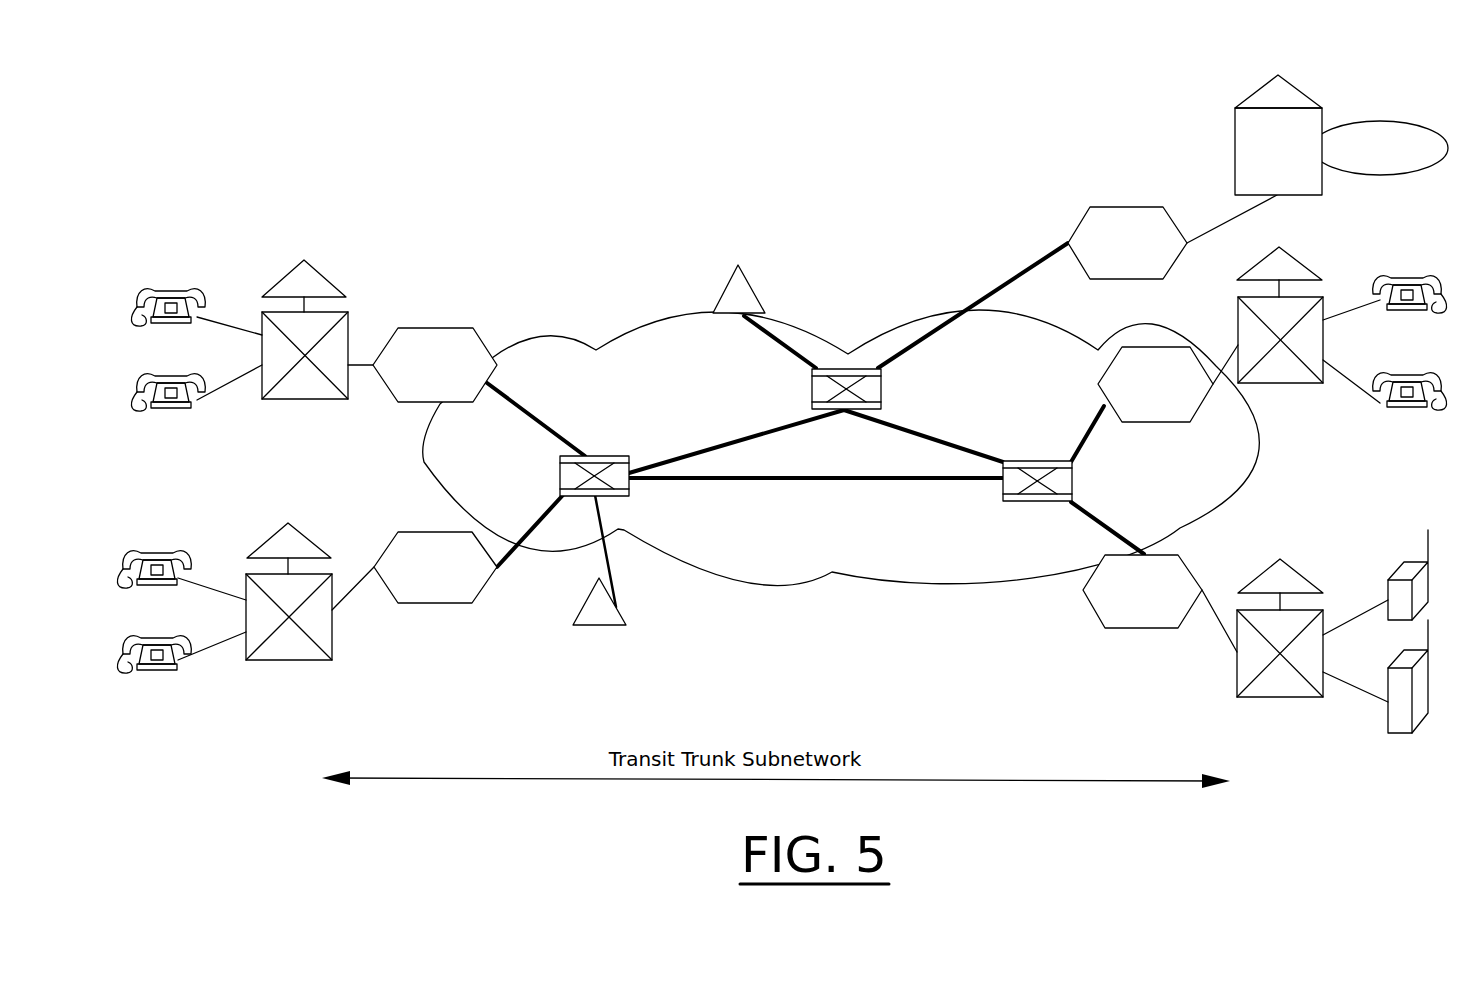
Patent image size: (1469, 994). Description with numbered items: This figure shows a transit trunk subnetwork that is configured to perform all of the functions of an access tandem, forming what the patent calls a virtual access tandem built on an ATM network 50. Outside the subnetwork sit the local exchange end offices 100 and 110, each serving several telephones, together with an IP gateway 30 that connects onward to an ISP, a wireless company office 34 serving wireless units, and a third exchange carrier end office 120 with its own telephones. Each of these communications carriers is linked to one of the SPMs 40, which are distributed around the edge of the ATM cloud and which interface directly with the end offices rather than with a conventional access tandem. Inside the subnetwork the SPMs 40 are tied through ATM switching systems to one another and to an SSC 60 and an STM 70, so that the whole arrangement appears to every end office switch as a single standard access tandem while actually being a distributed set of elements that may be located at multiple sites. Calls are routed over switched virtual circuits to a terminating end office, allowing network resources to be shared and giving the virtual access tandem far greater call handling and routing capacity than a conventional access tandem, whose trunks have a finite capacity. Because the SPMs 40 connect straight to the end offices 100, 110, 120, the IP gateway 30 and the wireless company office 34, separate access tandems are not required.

The IP gateway 30 is at (1311, 82).
The wireless company office 34 is at (1338, 600).
The SPMs 40 is at (430, 328).
The ATM transit trunk network 50 is at (868, 590).
The SSC 60 is at (594, 638).
The STM 70 is at (755, 264).
The local exchange end office 100 is at (272, 285).
The local exchange end office 110 is at (247, 660).
The third exchange carrier end office 120 is at (1323, 297).